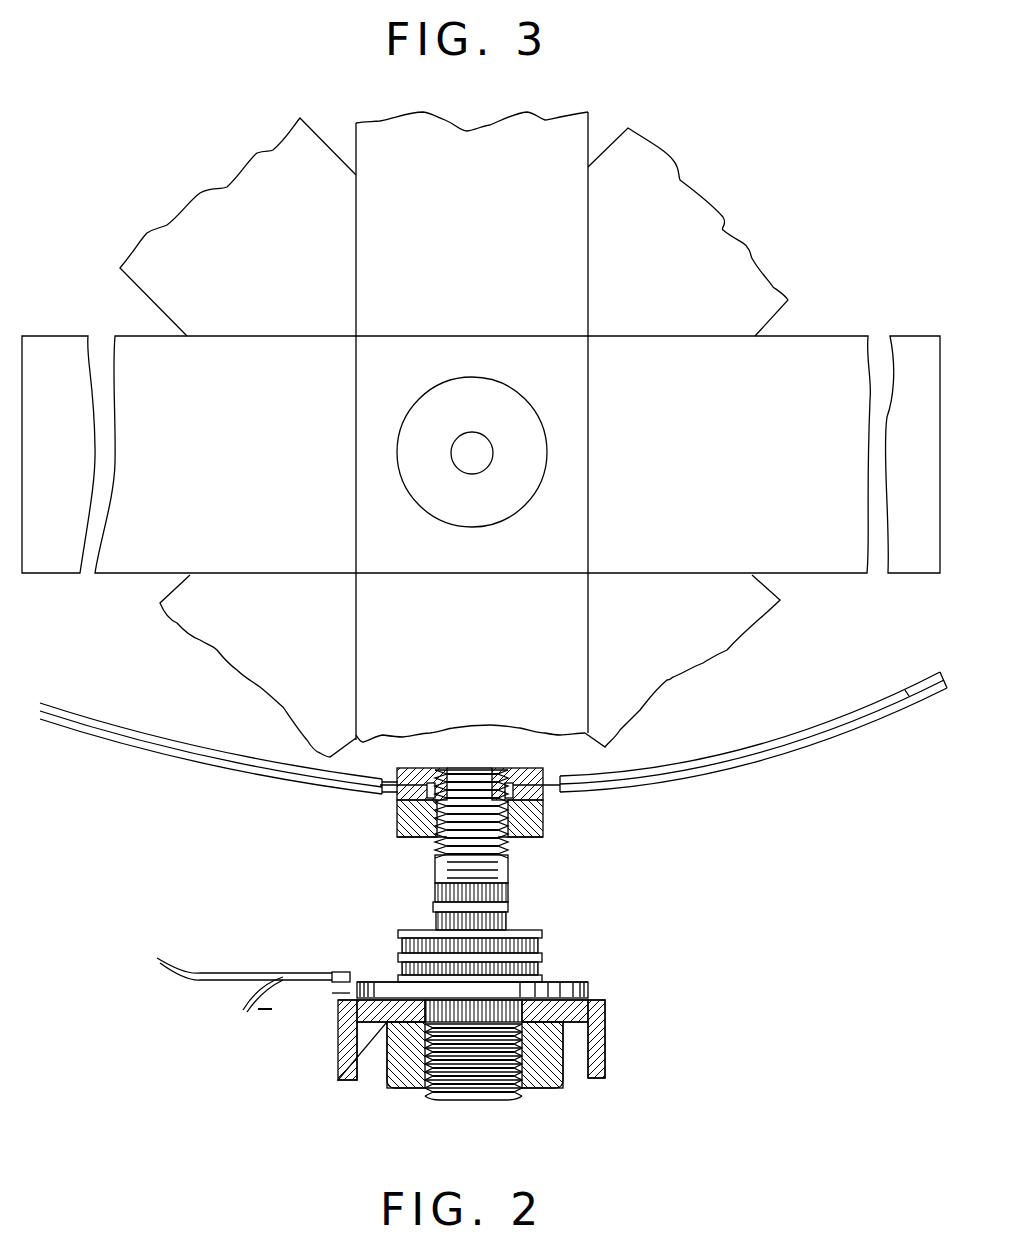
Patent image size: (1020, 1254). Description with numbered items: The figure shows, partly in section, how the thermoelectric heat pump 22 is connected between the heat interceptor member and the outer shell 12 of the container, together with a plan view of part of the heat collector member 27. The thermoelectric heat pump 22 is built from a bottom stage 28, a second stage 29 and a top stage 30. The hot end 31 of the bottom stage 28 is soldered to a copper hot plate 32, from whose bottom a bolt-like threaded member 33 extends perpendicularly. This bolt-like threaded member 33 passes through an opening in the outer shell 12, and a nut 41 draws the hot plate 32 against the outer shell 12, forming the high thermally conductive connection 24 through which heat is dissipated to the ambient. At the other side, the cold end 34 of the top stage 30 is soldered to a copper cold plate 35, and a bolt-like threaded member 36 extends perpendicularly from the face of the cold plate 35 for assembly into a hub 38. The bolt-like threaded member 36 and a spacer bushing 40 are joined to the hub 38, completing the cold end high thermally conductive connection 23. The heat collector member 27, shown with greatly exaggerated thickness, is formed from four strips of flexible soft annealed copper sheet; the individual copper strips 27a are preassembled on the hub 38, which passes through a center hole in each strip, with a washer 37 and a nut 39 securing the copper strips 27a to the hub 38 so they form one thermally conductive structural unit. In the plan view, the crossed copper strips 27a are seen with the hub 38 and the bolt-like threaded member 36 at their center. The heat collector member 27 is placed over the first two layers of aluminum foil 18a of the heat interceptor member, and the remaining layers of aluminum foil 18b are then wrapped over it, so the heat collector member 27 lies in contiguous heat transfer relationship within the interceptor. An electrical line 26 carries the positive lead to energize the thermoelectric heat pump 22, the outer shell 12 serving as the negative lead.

In FIG. 2, the outer shell 12 is at (605, 1040).
In FIG. 2, the aluminum foil layers 18a is at (750, 750).
In FIG. 2, the remaining aluminum foil layers 18b is at (777, 753).
In FIG. 2, the thermoelectric heat pump 22 is at (513, 946).
In FIG. 2, the high thermally conductive connection 23 is at (396, 840).
In FIG. 2, the high thermally conductive connection 24 is at (332, 993).
In FIG. 2, the electrical line 26 is at (368, 975).
In FIG. 3, the heat collector member 27 is at (608, 128).
In FIG. 2, the heat collector member 27 is at (553, 782).
In FIG. 3, the copper strips 27a is at (348, 663).
In FIG. 2, the bottom stage 28 is at (542, 962).
In FIG. 2, the second stage 29 is at (542, 940).
In FIG. 2, the top stage 30 is at (438, 925).
In FIG. 2, the hot end 31 is at (583, 979).
In FIG. 2, the hot plate 32 is at (588, 994).
In FIG. 2, the bolt-like threaded member 33 is at (495, 1095).
In FIG. 2, the cold end 34 is at (508, 916).
In FIG. 2, the cold plate 35 is at (508, 902).
In FIG. 3, the bolt-like threaded member 36 is at (477, 430).
In FIG. 2, the bolt-like threaded member 36 is at (450, 872).
In FIG. 2, the washer 37 is at (543, 793).
In FIG. 3, the hub 38 is at (466, 530).
In FIG. 2, the hub 38 is at (510, 850).
In FIG. 2, the nut 39 is at (543, 836).
In FIG. 2, the spacer bushing 40 is at (510, 883).
In FIG. 2, the nut 41 is at (563, 1060).